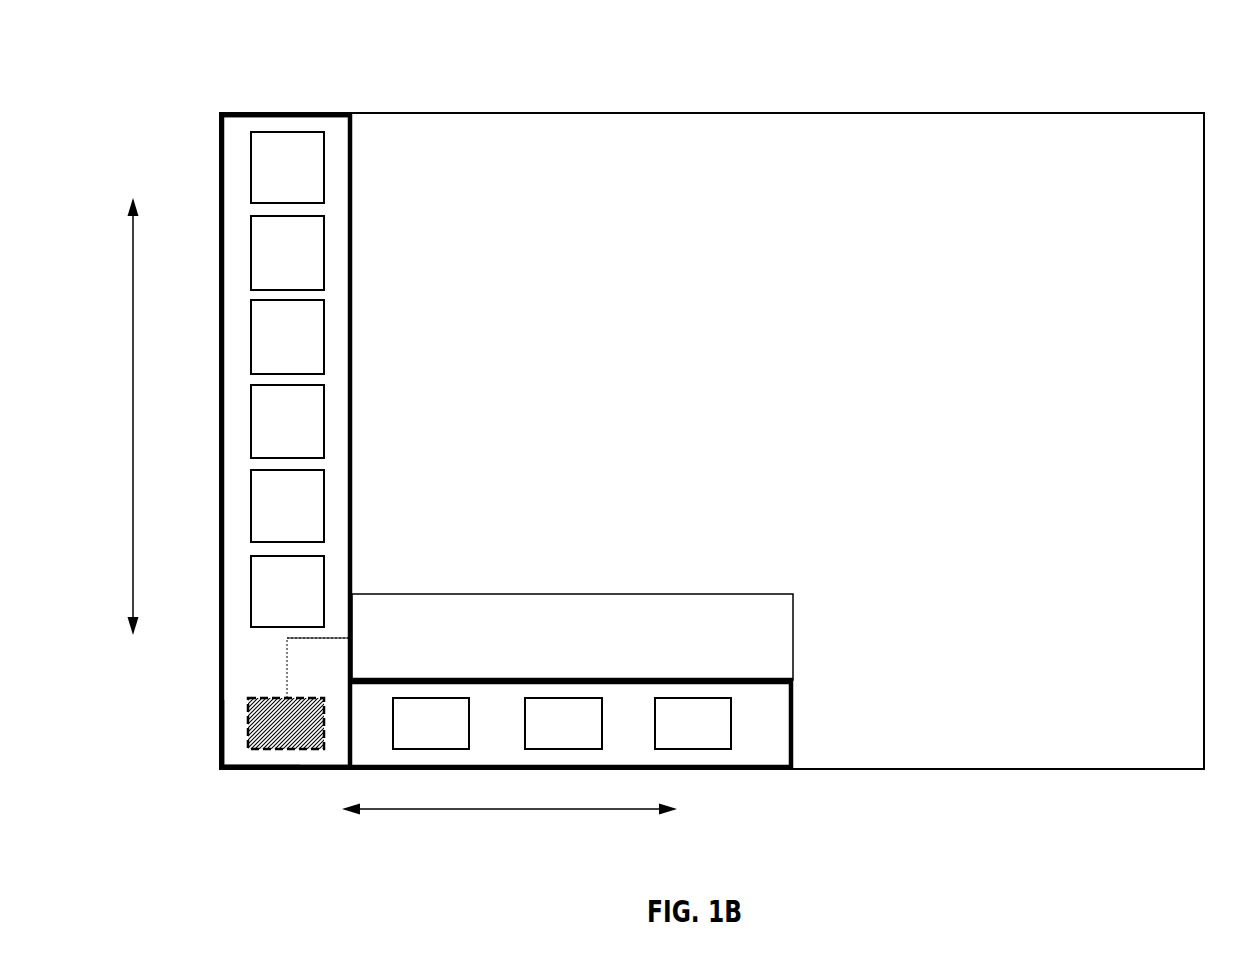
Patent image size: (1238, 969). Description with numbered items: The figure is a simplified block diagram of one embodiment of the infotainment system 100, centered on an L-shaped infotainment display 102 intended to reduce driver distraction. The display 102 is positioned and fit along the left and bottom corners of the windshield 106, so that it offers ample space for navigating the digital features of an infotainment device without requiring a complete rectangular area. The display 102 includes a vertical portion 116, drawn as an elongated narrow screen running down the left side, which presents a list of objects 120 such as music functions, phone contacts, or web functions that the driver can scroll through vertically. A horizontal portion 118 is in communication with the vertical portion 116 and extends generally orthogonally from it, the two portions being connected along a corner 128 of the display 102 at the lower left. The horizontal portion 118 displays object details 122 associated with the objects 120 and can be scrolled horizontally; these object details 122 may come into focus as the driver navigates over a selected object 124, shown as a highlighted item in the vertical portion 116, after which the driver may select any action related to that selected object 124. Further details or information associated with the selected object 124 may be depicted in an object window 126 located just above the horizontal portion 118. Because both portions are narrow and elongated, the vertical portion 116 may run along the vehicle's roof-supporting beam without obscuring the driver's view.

The infotainment system 100 is at (101, 37).
The L-shaped infotainment display 102 is at (220, 162).
The windshield 106 is at (729, 467).
The vertical portion 116 is at (288, 113).
The horizontal portion 118 is at (715, 770).
The objects 120 is at (383, 165).
The object details 122 is at (832, 697).
The selected object 124 is at (250, 721).
The object window 126 is at (572, 637).
The corner 128 is at (222, 770).